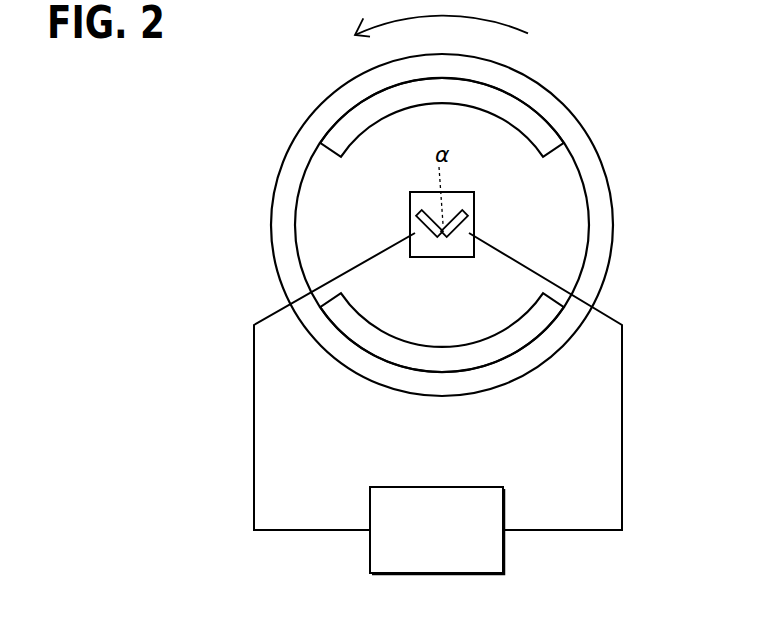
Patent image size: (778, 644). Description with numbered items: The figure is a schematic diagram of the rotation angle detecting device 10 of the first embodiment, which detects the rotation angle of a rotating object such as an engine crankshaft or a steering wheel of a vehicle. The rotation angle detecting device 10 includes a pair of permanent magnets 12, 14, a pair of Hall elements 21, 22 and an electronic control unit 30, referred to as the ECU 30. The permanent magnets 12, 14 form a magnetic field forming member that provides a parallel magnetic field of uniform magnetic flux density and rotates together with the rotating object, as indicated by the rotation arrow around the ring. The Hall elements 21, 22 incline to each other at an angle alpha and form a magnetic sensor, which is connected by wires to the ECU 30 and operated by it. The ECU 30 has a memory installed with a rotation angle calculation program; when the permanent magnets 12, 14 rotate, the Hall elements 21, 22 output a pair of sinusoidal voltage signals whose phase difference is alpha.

The rotation angle detecting device 10 is at (576, 97).
The permanent magnet 12 is at (346, 131).
The permanent magnet 14 is at (340, 315).
The Hall element 21 is at (420, 217).
The Hall element 22 is at (462, 217).
The electronic control unit 30 is at (428, 487).